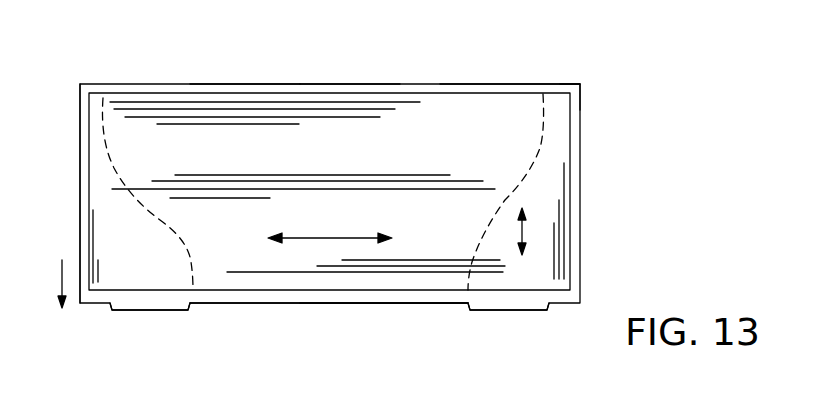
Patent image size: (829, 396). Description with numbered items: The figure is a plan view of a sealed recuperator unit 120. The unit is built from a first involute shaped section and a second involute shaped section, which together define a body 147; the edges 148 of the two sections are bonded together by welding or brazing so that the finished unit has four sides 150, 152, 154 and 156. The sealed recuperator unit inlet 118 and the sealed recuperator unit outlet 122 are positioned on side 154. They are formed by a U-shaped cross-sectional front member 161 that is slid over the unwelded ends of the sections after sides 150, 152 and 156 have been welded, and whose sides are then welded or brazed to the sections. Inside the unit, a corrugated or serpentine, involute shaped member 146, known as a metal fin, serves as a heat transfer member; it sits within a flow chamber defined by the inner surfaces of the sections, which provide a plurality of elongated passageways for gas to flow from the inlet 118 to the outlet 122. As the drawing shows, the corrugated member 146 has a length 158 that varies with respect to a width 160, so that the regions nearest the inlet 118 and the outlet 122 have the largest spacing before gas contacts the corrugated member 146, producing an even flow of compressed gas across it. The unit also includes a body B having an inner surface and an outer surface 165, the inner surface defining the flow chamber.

The sealed recuperator unit 120 is at (419, 75).
The sealed recuperator unit inlet 118 is at (168, 311).
The sealed recuperator unit outlet 122 is at (503, 311).
The front member 161 is at (280, 296).
The side 154 is at (388, 304).
The body 147 is at (235, 83).
The edges 148 is at (312, 83).
The side 150 is at (505, 83).
The body B is at (581, 86).
The outer surface 165 is at (163, 108).
The corrugated member 146 is at (548, 142).
The side 152 is at (580, 190).
The side 156 is at (80, 173).
The length 158 is at (330, 224).
The width 160 is at (522, 232).